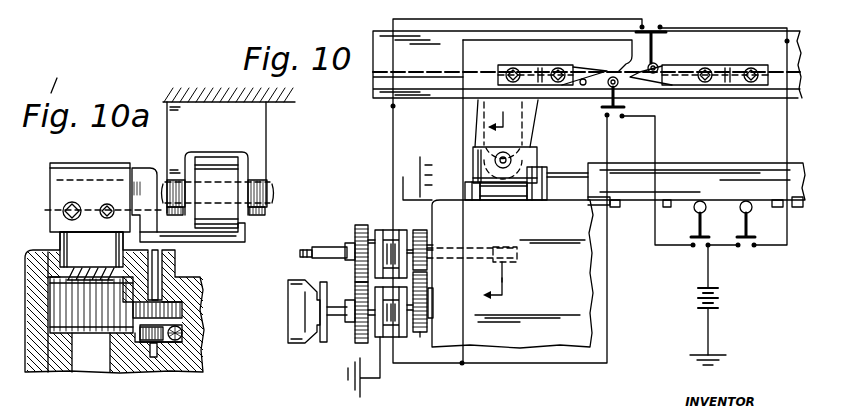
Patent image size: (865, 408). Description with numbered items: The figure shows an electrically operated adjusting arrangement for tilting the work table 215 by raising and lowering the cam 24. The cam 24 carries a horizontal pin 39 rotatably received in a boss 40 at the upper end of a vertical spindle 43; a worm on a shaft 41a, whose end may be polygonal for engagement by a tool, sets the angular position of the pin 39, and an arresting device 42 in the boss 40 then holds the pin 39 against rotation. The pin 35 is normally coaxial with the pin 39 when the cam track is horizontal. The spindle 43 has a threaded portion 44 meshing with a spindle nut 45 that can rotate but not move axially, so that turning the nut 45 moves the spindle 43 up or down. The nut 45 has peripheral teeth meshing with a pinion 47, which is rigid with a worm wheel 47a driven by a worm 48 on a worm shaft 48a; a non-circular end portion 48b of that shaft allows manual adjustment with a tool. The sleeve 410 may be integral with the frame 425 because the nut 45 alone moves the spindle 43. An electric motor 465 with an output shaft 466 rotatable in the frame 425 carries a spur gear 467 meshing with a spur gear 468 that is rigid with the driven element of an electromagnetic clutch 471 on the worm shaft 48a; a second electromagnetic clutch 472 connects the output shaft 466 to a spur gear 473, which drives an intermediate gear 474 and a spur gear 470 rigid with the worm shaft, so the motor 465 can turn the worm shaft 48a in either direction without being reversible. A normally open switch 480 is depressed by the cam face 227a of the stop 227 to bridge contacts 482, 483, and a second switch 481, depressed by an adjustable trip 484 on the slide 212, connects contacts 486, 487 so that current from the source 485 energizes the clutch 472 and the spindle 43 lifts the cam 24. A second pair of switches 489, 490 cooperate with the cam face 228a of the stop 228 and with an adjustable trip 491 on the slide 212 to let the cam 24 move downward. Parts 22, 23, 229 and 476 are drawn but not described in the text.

In FIG. 10a, the carriage 22 is at (253, 139).
In FIG. 10, the carriage 22 is at (521, 127).
In FIG. 10a, the roller 23 is at (212, 163).
In FIG. 10, the roller 23 is at (537, 157).
In FIG. 10a, the cam 24 is at (234, 240).
In FIG. 10, the cam 24 is at (472, 184).
In FIG. 10a, the pin 35 is at (268, 193).
In FIG. 10, the pin 35 is at (479, 148).
In FIG. 10a, the horizontal pin 39 is at (88, 178).
In FIG. 10, the horizontal pin 39 is at (497, 160).
In FIG. 10a, the holder or boss 40 is at (55, 172).
In FIG. 10a, the shaft 41a is at (62, 210).
In FIG. 10a, the arresting device 42 is at (107, 203).
In FIG. 10a, the spindle 43 is at (88, 363).
In FIG. 10, the spindle 43 is at (508, 198).
In FIG. 10a, the threaded portion 44 is at (88, 272).
In FIG. 10a, the spindle nut 45 is at (67, 300).
In FIG. 10a, the pinion 47 is at (187, 307).
In FIG. 10a, the worm wheel 47a is at (165, 342).
In FIG. 10a, the worm 48 is at (185, 333).
In FIG. 10, the worm 48 is at (499, 280).
In FIG. 10, the worm shaft 48a is at (330, 248).
In FIG. 10, the non-circular end portion 48b is at (302, 250).
In FIG. 10, the slide 212 is at (700, 188).
In FIG. 10a, the work table 215 is at (180, 97).
In FIG. 10, the work table 215 is at (380, 99).
In FIG. 10, the stop 227 is at (540, 71).
In FIG. 10, the cam face 227a is at (585, 68).
In FIG. 10, the stop 228 is at (720, 87).
In FIG. 10, the cam face 228a is at (661, 66).
In FIG. 10, the roller 229 is at (613, 77).
In FIG. 10a, the sleeve 410 is at (60, 360).
In FIG. 10a, the frame 425 is at (108, 304).
In FIG. 10, the frame 425 is at (575, 293).
In FIG. 10, the electric motor 465 is at (293, 320).
In FIG. 10, the output shaft 466 is at (343, 302).
In FIG. 10, the spur gear 467 is at (356, 336).
In FIG. 10, the spur gear 468 is at (358, 227).
In FIG. 10, the spur gear 470 is at (420, 231).
In FIG. 10, the electromagnetic clutch 471 is at (383, 231).
In FIG. 10, the second electromagnetic clutch 472 is at (394, 365).
In FIG. 10, the spur gear 473 is at (420, 333).
In FIG. 10, the intermediate gear 474 is at (430, 290).
In FIG. 10a, the pin 476 is at (157, 280).
In FIG. 10, the normally open switch 480 is at (641, 113).
In FIG. 10, the normally open second switch 481 is at (693, 247).
In FIG. 10, the contact 482 is at (606, 118).
In FIG. 10, the contact 483 is at (622, 119).
In FIG. 10, the adjustable trip 484 is at (648, 201).
In FIG. 10, the source of electrical energy 485 is at (722, 296).
In FIG. 10, the contact 486 is at (690, 242).
In FIG. 10, the contact 487 is at (709, 242).
In FIG. 10, the normally open switch 489 is at (653, 22).
In FIG. 10, the normally open switch 490 is at (745, 249).
In FIG. 10, the adjustable trip 491 is at (793, 207).